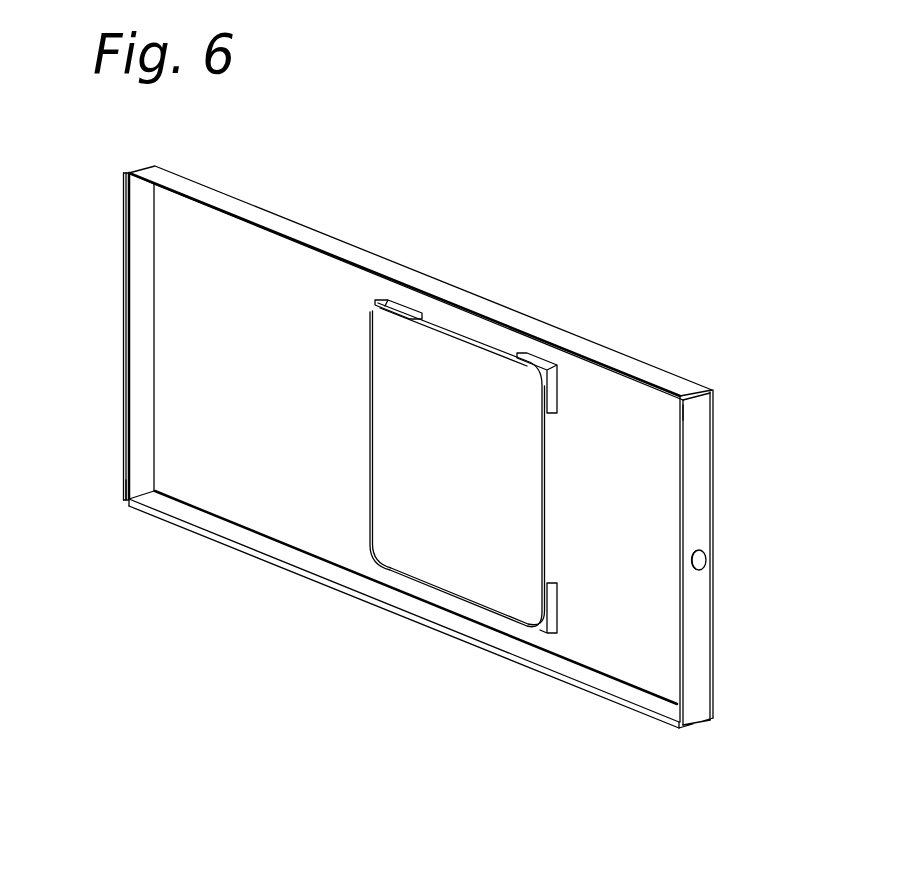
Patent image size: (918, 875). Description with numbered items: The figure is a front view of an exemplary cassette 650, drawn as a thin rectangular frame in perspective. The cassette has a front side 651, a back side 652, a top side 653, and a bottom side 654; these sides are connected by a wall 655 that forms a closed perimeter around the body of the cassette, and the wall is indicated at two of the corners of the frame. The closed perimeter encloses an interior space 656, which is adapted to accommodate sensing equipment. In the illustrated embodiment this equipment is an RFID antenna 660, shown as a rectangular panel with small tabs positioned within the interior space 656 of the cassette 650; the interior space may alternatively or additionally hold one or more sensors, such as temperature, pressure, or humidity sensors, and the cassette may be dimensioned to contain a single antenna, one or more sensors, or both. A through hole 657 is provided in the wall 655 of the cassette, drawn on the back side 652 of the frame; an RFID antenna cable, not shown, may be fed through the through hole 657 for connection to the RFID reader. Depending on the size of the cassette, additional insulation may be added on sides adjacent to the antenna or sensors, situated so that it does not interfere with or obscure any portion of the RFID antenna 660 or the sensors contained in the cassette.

The cassette 650 is at (410, 462).
The front side 651 is at (180, 443).
The back side 652 is at (743, 536).
The top side 653 is at (207, 190).
The bottom side 654 is at (488, 650).
The wall 655 is at (157, 513).
The interior space 656 is at (623, 635).
The through hole 657 is at (708, 560).
The RFID antenna 660 is at (420, 567).